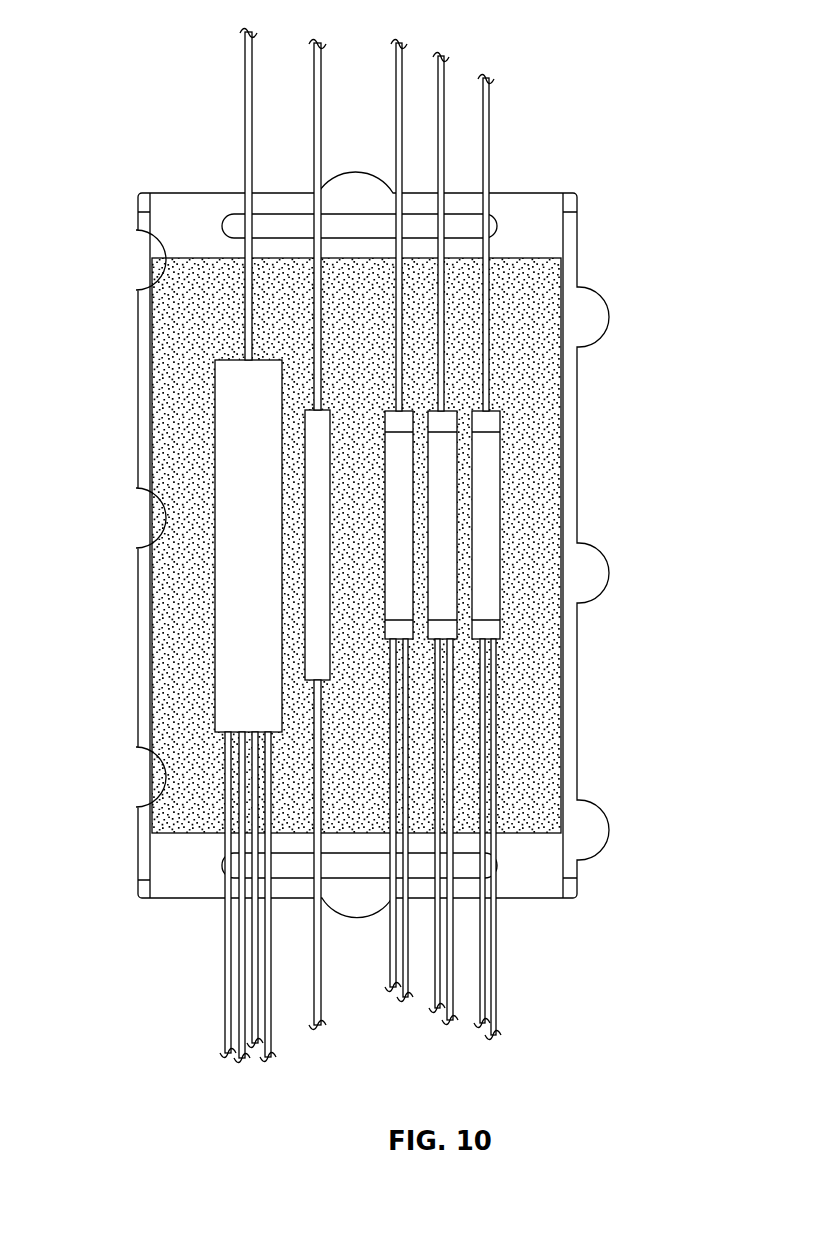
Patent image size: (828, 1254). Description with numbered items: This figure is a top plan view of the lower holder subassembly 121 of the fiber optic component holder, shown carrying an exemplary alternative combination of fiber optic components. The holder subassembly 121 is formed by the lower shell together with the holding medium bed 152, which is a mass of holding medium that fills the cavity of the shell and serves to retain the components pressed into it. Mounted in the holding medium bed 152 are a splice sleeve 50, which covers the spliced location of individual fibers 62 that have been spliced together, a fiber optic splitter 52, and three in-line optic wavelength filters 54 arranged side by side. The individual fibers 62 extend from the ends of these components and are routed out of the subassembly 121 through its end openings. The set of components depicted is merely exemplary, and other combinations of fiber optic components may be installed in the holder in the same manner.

The holder subassembly 121 is at (600, 188).
The holding medium bed 152 is at (170, 330).
The fiber optic splitter 52 is at (230, 480).
The splice sleeve 50 is at (313, 467).
The in-line optic wavelength filters 54 is at (400, 495).
The individual fibers 62 is at (243, 128).